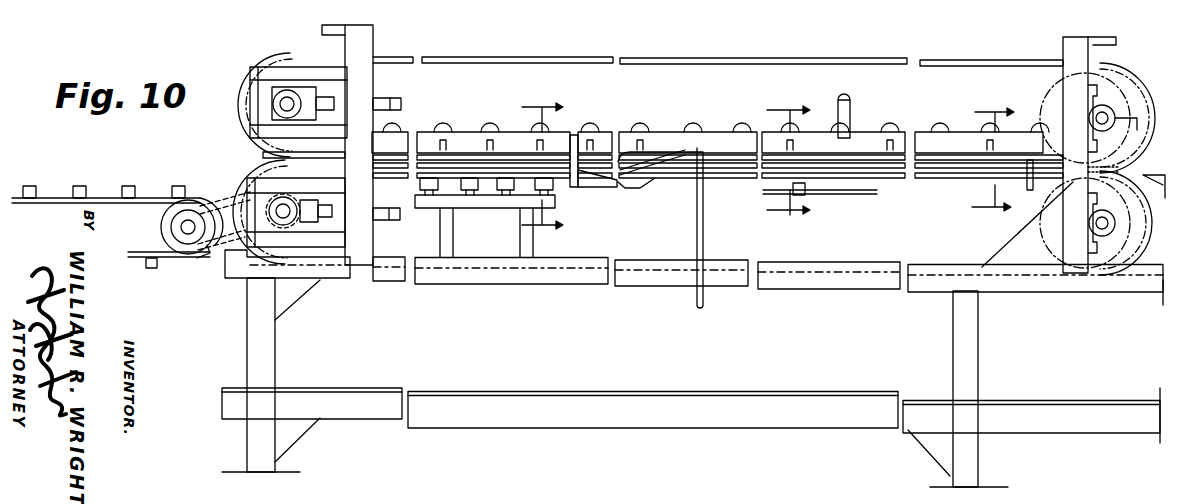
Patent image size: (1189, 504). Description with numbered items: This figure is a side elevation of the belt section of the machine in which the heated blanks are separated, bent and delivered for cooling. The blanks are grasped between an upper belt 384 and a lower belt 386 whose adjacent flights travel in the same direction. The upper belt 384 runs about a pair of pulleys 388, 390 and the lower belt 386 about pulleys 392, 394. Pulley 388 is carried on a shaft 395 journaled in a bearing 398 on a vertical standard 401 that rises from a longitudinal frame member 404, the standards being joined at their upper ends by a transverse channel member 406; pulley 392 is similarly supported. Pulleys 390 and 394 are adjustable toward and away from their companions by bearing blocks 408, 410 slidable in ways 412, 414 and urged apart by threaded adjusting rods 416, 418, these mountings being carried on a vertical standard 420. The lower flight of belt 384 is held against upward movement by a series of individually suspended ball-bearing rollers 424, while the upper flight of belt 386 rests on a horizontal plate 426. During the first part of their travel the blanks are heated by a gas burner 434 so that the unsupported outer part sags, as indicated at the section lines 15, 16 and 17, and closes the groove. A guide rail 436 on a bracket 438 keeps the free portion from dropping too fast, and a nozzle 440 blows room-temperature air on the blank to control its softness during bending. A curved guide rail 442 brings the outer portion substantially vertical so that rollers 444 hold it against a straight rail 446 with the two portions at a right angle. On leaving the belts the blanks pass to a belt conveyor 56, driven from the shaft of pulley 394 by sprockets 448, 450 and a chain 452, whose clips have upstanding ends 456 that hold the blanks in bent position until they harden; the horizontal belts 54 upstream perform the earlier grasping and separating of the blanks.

The horizontal belts 54 is at (1100, 314).
The belt conveyor 56 is at (102, 195).
The upper belt 384 is at (672, 47).
The lower belt 386 is at (1153, 266).
The pulley 388 is at (1058, 103).
The pulley 390 is at (274, 60).
The pulley 392 is at (1115, 214).
The pulley 394 is at (300, 250).
The shaft 395 is at (1137, 130).
The bearing 398 is at (1118, 105).
The vertical standard 401 is at (1073, 40).
The longitudinal frame member 404 is at (935, 10).
The transverse channel member 406 is at (1110, 37).
The bearing block 408 is at (288, 90).
The bearing block 410 is at (272, 188).
The way 412 is at (258, 78).
The way 414 is at (290, 283).
The threaded adjusting rod 416 is at (388, 99).
The threaded adjusting rod 418 is at (385, 220).
The vertical standard 420 is at (362, 35).
The ball-bearing rollers 424 is at (492, 130).
The horizontal plate 426 is at (648, 175).
The gas burner 434 is at (880, 140).
The guide rail 436 is at (932, 182).
The bracket 438 is at (806, 192).
The nozzle 440 is at (722, 147).
The guide rail 442 is at (620, 190).
The rollers 444 is at (522, 192).
The straight rail 446 is at (430, 182).
The sprocket 448 is at (180, 227).
The sprocket 450 is at (242, 207).
The chain 452 is at (222, 262).
The upstanding ends 456 is at (136, 190).
The section line 15 is at (993, 162).
The section line 16 is at (785, 161).
The section line 17 is at (542, 167).